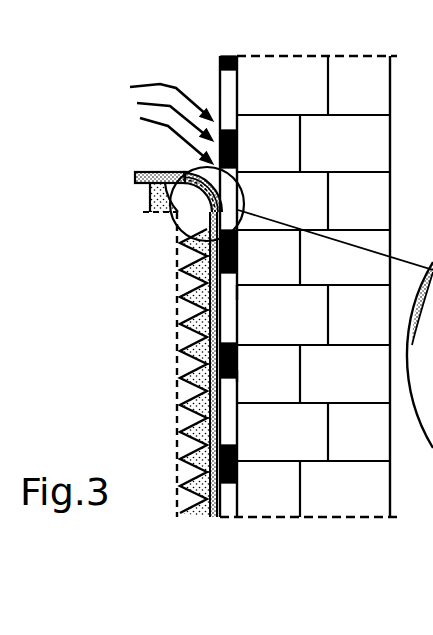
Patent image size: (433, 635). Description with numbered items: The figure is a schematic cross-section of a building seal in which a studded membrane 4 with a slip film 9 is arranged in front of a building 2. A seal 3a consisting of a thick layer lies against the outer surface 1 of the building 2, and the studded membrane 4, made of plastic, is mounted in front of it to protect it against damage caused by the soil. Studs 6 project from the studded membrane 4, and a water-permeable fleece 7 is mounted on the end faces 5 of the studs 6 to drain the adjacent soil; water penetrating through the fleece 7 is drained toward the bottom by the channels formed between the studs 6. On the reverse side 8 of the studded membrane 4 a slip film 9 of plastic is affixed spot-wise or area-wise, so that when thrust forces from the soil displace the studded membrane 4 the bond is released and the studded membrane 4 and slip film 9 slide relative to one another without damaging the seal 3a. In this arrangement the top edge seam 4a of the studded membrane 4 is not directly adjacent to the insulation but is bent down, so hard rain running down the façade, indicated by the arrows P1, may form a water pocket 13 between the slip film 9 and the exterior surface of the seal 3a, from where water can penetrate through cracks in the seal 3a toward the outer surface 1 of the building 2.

The outer surface 1 is at (221, 56).
The building 2 is at (352, 73).
The seal 3a is at (233, 90).
The studded membrane 4 is at (148, 198).
The top edge seam 4a is at (168, 165).
The end faces 5 is at (180, 293).
The studs 6 is at (192, 337).
The fleece 7 is at (178, 388).
The reverse side 8 is at (238, 289).
The slip film 9 is at (238, 376).
The water pocket 13 is at (235, 186).
The arrows P1 is at (158, 124).